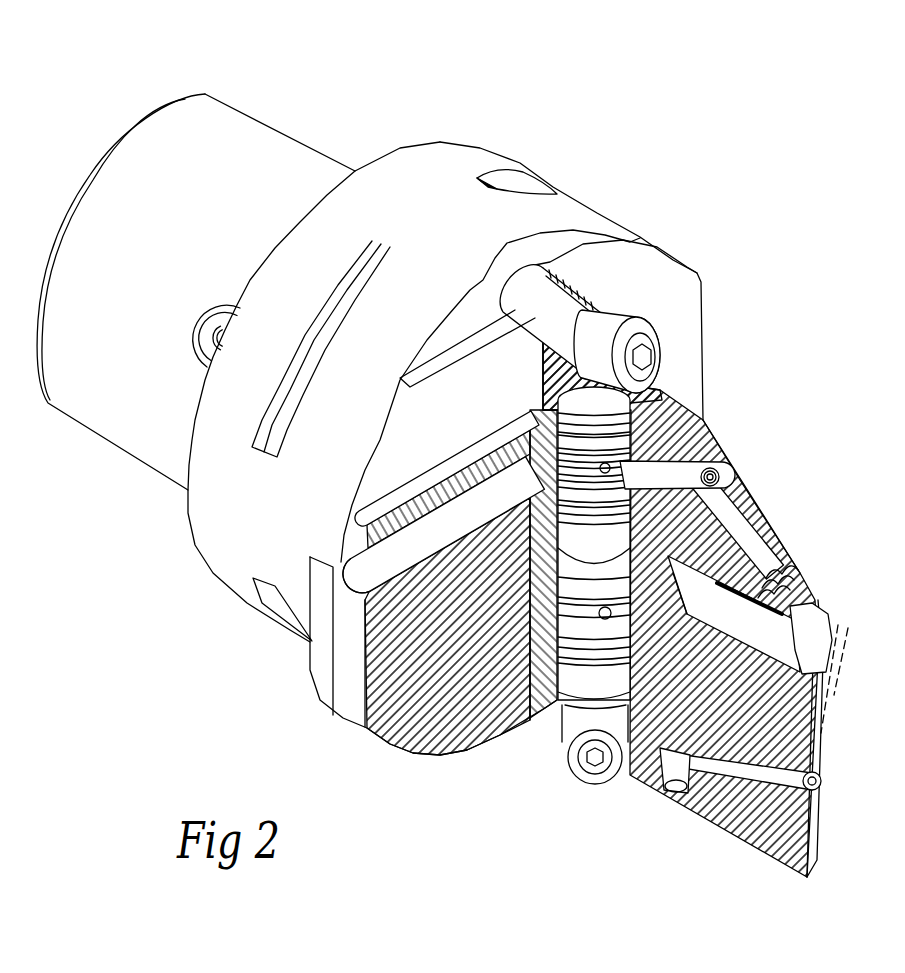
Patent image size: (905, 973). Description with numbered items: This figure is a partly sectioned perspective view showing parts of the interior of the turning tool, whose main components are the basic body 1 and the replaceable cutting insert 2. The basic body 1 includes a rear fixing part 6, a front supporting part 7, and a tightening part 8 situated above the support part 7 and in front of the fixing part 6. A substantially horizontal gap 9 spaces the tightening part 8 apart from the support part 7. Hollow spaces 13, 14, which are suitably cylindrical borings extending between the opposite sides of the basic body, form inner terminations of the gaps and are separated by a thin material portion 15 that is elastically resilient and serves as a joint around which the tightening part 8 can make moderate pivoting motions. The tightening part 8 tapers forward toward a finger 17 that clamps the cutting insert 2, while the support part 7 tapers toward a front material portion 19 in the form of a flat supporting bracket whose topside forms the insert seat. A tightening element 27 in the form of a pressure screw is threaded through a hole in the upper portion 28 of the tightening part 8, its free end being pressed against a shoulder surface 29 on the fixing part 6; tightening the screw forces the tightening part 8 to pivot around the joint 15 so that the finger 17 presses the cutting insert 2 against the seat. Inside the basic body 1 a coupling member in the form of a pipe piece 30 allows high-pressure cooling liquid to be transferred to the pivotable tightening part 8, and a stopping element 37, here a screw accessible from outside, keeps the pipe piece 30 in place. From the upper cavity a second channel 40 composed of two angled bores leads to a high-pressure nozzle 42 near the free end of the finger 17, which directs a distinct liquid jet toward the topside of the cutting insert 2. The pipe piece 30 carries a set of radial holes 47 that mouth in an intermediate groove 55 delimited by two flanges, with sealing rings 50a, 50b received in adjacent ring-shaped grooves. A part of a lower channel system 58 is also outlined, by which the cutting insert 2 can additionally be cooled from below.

The basic body 1 is at (380, 98).
The cutting insert 2 is at (832, 624).
The rear fixing part 6 is at (182, 548).
The front supporting part 7 is at (447, 772).
The tightening part 8 is at (708, 268).
The first horizontal gap 9 is at (653, 560).
The hollow space 13 is at (365, 574).
The hollow space 14 is at (436, 478).
The material portion 15 is at (442, 500).
The finger 17 is at (790, 536).
The front material portion 19 is at (752, 845).
The tightening element 27 is at (535, 303).
The upper portion 28 is at (615, 262).
The shoulder surface 29 is at (472, 300).
The pipe piece 30 is at (556, 700).
The stopping element 37 is at (604, 772).
The second channel 40 is at (727, 537).
The high-pressure nozzle 42 is at (778, 572).
The radial holes 47 is at (605, 473).
The sealing ring 50a is at (558, 430).
The sealing ring 50b is at (625, 492).
The intermediate groove 55 is at (577, 467).
The lower channel system 58 is at (727, 767).